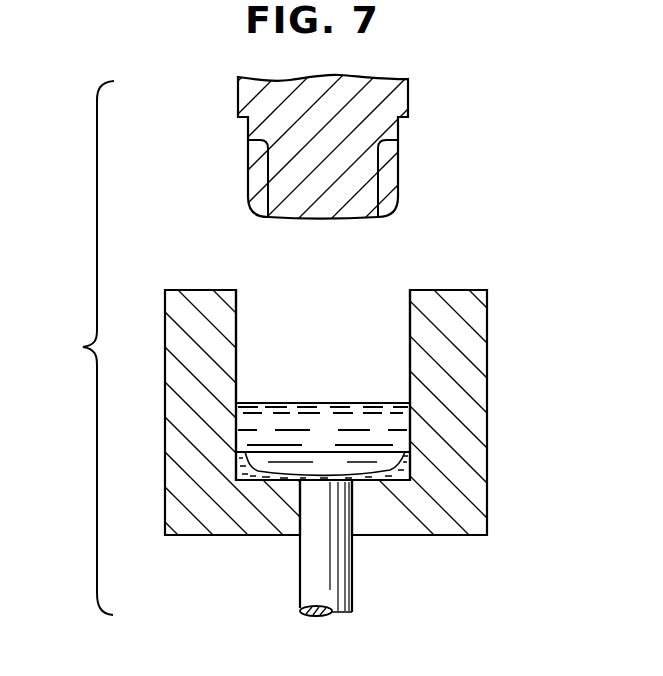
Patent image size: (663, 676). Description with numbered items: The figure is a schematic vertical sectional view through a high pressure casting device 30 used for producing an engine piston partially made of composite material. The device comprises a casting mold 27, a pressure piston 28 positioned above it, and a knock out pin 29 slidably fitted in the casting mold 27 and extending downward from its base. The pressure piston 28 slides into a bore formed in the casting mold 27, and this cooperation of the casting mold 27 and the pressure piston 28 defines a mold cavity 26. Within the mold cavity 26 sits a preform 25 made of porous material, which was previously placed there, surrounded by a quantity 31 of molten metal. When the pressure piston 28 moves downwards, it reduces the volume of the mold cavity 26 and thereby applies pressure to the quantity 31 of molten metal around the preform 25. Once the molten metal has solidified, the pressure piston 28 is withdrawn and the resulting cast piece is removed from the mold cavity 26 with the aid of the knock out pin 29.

The high pressure casting device 30 is at (82, 348).
The pressure piston 28 is at (410, 98).
The casting mold 27 is at (478, 360).
The mold cavity 26 is at (237, 303).
The quantity of molten metal 31 is at (303, 413).
The preform 25 is at (412, 465).
The knock out pin 29 is at (352, 587).